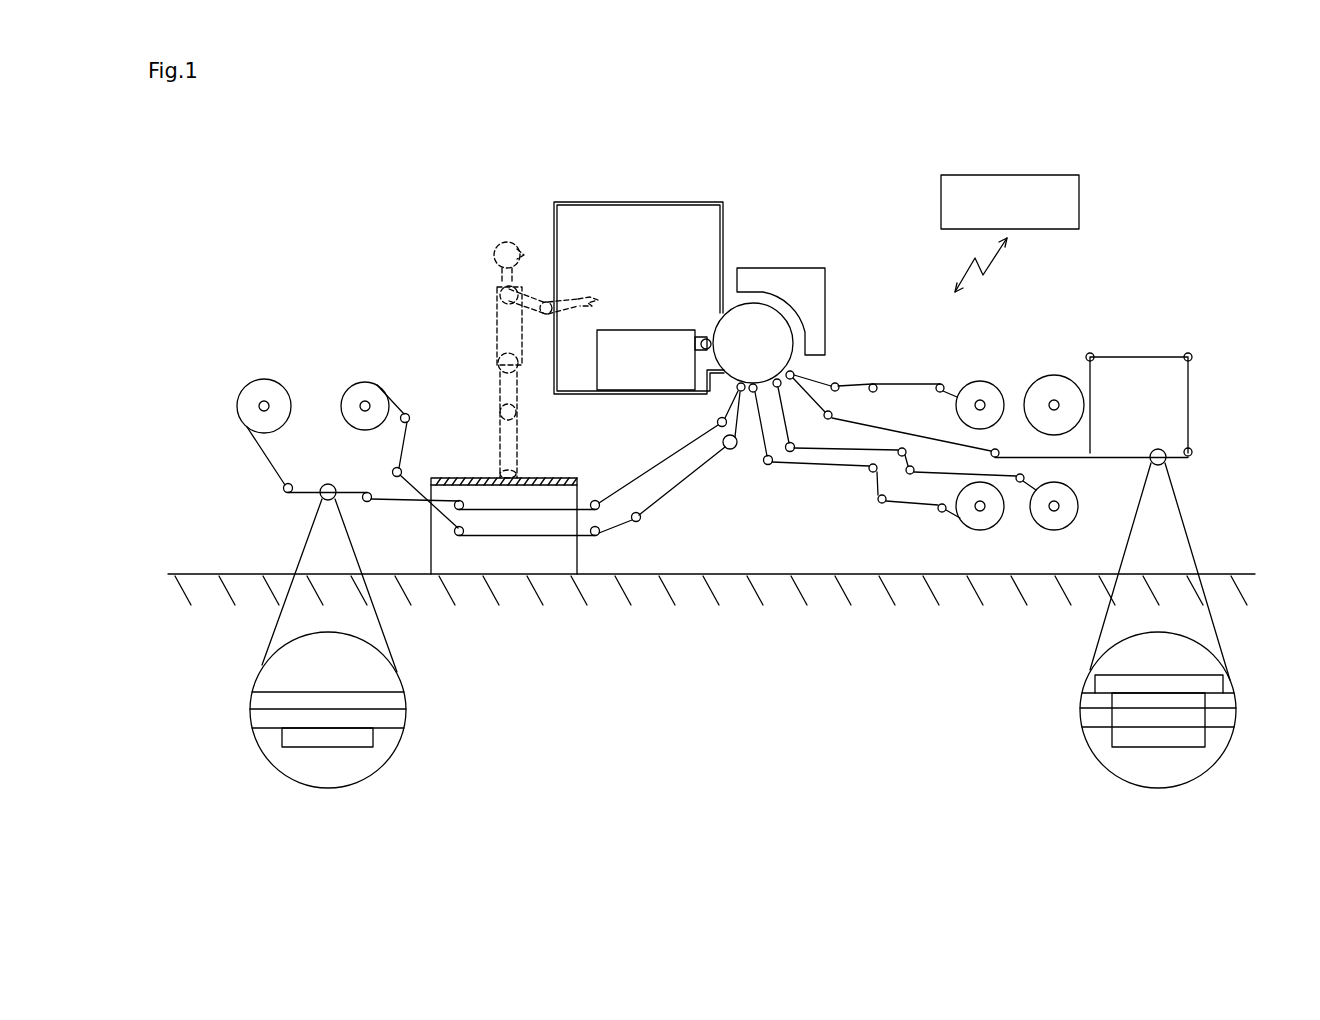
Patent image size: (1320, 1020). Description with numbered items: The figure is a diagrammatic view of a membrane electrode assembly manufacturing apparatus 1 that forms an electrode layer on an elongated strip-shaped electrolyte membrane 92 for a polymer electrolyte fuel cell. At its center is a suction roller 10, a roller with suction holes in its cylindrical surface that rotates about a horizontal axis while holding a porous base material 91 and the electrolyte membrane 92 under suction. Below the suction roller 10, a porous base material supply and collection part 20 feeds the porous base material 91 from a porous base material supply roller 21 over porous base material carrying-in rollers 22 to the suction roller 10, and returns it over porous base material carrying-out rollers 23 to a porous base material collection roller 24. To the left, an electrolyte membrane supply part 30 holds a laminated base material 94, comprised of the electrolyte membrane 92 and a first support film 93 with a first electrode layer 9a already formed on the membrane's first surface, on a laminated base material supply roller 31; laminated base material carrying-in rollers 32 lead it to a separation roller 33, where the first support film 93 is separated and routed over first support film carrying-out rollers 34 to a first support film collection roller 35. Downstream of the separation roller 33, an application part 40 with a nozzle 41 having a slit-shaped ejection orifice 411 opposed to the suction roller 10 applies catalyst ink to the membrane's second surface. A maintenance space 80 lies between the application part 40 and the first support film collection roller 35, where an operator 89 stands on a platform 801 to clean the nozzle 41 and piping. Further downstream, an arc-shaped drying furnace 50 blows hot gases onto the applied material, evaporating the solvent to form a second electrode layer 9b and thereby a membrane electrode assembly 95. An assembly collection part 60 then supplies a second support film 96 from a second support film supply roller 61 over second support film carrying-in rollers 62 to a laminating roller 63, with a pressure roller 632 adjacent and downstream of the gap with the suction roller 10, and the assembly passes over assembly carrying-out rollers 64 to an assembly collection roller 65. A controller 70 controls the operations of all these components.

The membrane electrode assembly manufacturing apparatus 1 is at (322, 215).
The suction roller 10 is at (753, 330).
The porous base material supply and collection part 20 is at (917, 560).
The porous base material supply roller 21 is at (979, 507).
The porous base material carrying-in rollers 22 is at (878, 500).
The porous base material carrying-out rollers 23 is at (910, 475).
The porous base material collection roller 24 is at (1053, 507).
The electrolyte membrane supply part 30 is at (330, 345).
The laminated base material supply roller 31 is at (265, 403).
The laminated base material carrying-in rollers 32 is at (600, 537).
The separation roller 33 is at (736, 390).
The first support film carrying-out rollers 34 is at (596, 500).
The first support film collection roller 35 is at (362, 410).
The application part 40 is at (650, 348).
The nozzle 41 is at (723, 321).
The ejection orifice 411 is at (717, 343).
The drying furnace 50 is at (808, 300).
The assembly collection part 60 is at (1092, 335).
The second support film supply roller 61 is at (981, 402).
The second support film carrying-in rollers 62 is at (939, 383).
The laminating roller 63 is at (798, 370).
The pressure roller 632 is at (791, 380).
The assembly carrying-out rollers 64 is at (1186, 450).
The assembly collection roller 65 is at (1053, 402).
The controller 70 is at (1080, 200).
The maintenance space 80 is at (462, 250).
The operator 89 is at (487, 318).
The platform 801 is at (475, 478).
The porous base material 91 is at (789, 465).
The electrolyte membrane 92 is at (398, 720).
The first support film 93 is at (406, 413).
The laminated base material 94 is at (266, 458).
The membrane electrode assembly 95 is at (1118, 460).
The second support film 96 is at (899, 390).
The first electrode layer 9a is at (328, 740).
The second electrode layer 9b is at (1162, 700).